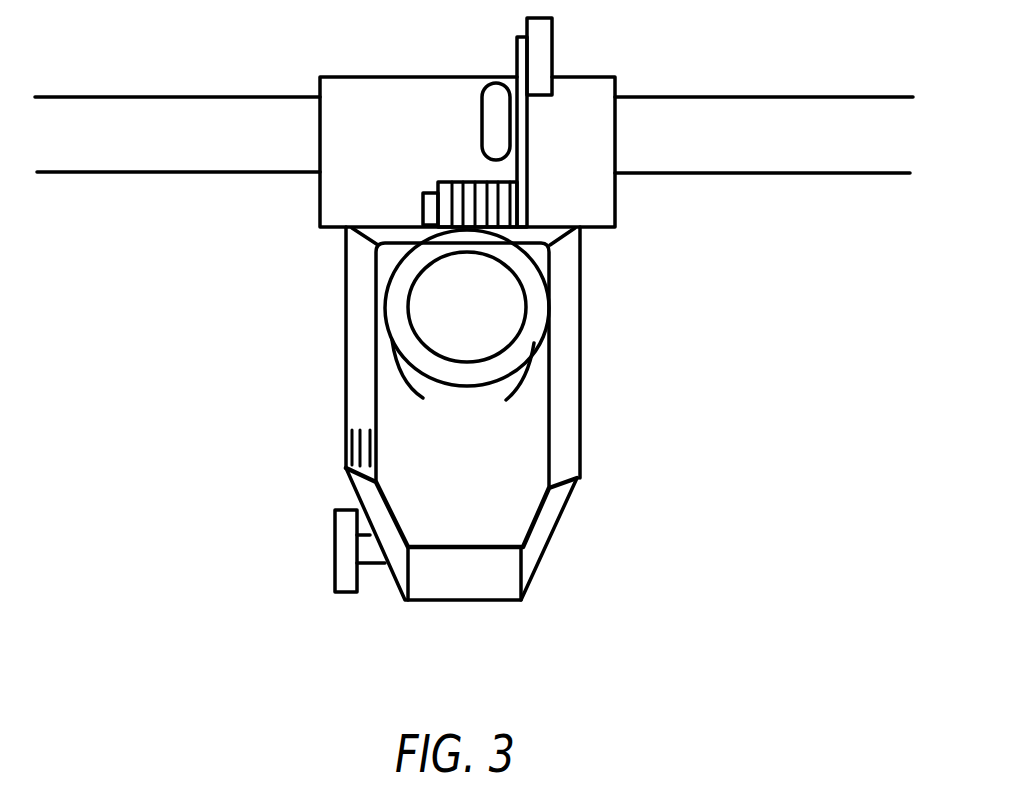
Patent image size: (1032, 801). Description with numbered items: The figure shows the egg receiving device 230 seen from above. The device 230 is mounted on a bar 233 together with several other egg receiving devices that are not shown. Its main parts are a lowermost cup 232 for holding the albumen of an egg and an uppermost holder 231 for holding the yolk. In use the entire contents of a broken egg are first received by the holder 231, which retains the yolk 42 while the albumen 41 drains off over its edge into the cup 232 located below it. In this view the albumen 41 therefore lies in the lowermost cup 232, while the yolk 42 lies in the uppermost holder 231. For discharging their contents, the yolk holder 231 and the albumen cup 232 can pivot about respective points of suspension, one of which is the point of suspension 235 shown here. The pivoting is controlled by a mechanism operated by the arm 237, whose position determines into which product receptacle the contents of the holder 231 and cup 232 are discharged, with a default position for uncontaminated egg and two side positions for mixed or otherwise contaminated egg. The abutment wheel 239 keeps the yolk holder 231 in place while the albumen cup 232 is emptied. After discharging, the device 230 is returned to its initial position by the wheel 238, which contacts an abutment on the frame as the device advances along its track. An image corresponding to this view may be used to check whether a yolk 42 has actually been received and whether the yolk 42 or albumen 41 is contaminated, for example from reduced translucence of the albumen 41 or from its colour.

The albumen 41 is at (520, 447).
The yolk 42 is at (497, 310).
The vent ribs 230 is at (345, 453).
The holder 231 is at (553, 532).
The cup 232 is at (515, 345).
The bar 233 is at (218, 117).
The point of suspension 235 is at (427, 200).
The arm 237 is at (492, 103).
The wheel 238 is at (340, 553).
The abutment wheel 239 is at (542, 53).